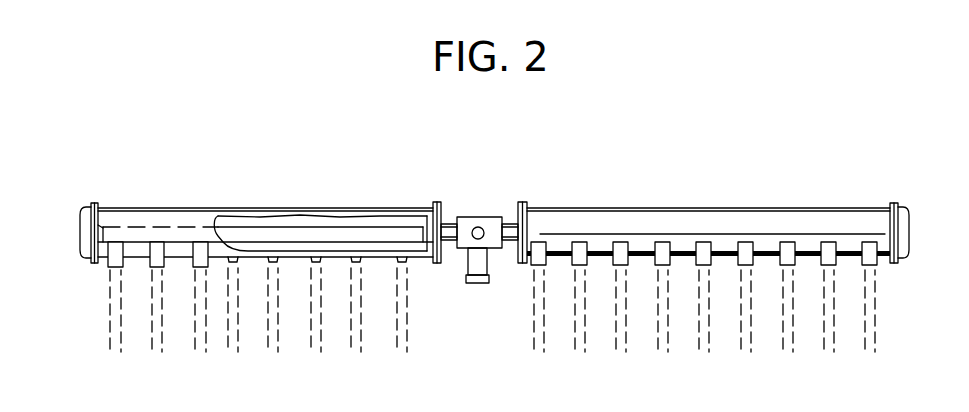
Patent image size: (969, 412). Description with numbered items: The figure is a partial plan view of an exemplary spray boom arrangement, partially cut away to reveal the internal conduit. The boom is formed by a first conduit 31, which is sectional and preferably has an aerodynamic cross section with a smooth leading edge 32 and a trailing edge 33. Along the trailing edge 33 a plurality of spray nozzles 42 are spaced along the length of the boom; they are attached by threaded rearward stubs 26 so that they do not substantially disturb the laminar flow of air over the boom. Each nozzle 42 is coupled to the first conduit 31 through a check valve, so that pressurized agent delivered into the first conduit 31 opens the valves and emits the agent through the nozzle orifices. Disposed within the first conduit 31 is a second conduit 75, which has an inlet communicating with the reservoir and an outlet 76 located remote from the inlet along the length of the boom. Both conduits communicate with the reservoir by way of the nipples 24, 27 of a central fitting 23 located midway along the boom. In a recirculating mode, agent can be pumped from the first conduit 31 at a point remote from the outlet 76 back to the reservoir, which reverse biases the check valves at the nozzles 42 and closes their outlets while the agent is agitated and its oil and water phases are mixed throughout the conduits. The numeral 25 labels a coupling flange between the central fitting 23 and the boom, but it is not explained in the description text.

The central fitting 23 is at (478, 208).
The nipple 24 is at (478, 283).
The flange coupling 25 is at (425, 232).
The threaded rearward stub 26 is at (273, 263).
The nipple 27 is at (484, 228).
The first conduit 31 is at (175, 217).
The leading edge 32 is at (815, 208).
The trailing edge 33 is at (808, 258).
The spray nozzle 42 is at (155, 257).
The second conduit 75 is at (130, 212).
The outlet 76 is at (85, 202).